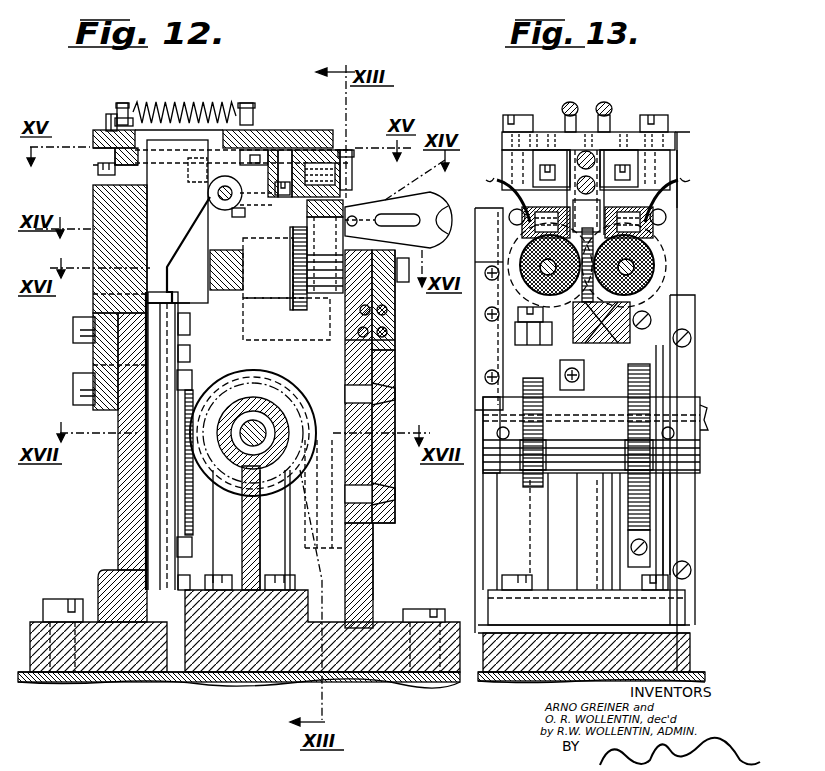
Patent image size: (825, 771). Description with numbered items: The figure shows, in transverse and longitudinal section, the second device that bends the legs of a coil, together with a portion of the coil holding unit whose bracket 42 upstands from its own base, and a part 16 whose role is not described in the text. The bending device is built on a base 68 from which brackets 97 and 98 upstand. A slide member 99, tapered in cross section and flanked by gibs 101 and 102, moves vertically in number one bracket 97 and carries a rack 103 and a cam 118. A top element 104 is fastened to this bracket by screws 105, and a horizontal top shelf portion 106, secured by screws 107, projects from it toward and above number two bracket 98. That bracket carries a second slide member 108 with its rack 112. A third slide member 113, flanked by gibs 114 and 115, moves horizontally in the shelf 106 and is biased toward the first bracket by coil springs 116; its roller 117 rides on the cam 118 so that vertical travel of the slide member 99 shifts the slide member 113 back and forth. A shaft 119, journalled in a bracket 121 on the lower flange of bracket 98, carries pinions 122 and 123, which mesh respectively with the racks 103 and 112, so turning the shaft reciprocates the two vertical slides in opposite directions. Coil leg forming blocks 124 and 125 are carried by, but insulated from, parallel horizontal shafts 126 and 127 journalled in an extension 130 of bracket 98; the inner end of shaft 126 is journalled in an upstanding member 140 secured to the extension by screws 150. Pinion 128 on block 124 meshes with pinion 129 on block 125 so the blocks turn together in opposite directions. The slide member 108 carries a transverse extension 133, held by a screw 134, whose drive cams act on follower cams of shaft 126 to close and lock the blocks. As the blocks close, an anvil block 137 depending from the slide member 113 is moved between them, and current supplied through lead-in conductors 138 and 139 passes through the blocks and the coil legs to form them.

In FIG. 12, the roller 16 is at (410, 203).
In FIG. 12, the bracket 42 is at (396, 243).
In FIG. 12, the base 68 is at (38, 665).
In FIG. 13, the base 68 is at (700, 668).
In FIG. 12, the bracket 97 is at (127, 499).
In FIG. 12, the bracket 98 is at (376, 571).
In FIG. 13, the bracket 98 is at (487, 641).
In FIG. 12, the slide member 99 is at (148, 313).
In FIG. 13, the slide member 99 is at (663, 385).
In FIG. 13, the gib 101 is at (690, 314).
In FIG. 12, the gib 102 is at (146, 522).
In FIG. 13, the gib 102 is at (592, 393).
In FIG. 12, the rack 103 is at (184, 522).
In FIG. 12, the top element 104 is at (101, 202).
In FIG. 13, the top element 104 is at (660, 231).
In FIG. 12, the screws 105 is at (80, 335).
In FIG. 12, the top shelf portion 106 is at (273, 130).
In FIG. 13, the top shelf portion 106 is at (677, 132).
In FIG. 12, the screws 107 is at (107, 118).
In FIG. 12, the slide member 108 is at (374, 537).
In FIG. 13, the slide member 108 is at (485, 378).
In FIG. 13, the rack 112 is at (628, 535).
In FIG. 12, the slide member 113 is at (114, 158).
In FIG. 13, the slide member 113 is at (546, 132).
In FIG. 13, the gib 114 is at (506, 132).
In FIG. 13, the gib 115 is at (628, 150).
In FIG. 12, the coil springs 116 is at (183, 104).
In FIG. 13, the coil springs 116 is at (572, 103).
In FIG. 12, the roller 117 is at (208, 196).
In FIG. 12, the cam 118 is at (167, 280).
In FIG. 12, the shaft 119 is at (240, 430).
In FIG. 13, the shaft 119 is at (483, 472).
In FIG. 12, the bracket 121 is at (216, 579).
In FIG. 13, the bracket 121 is at (562, 538).
In FIG. 12, the pinion 122 is at (229, 376).
In FIG. 13, the pinion 122 is at (626, 488).
In FIG. 13, the pinion 123 is at (530, 490).
In FIG. 13, the coil leg forming block 124 is at (510, 192).
In FIG. 12, the coil leg forming block 125 is at (318, 250).
In FIG. 13, the coil leg forming block 125 is at (610, 208).
In FIG. 13, the shaft 126 is at (487, 280).
In FIG. 12, the shaft 127 is at (401, 290).
In FIG. 13, the shaft 127 is at (650, 260).
In FIG. 13, the pinion 128 is at (488, 270).
In FIG. 12, the pinion 129 is at (259, 255).
In FIG. 13, the pinion 129 is at (660, 272).
In FIG. 12, the extension 130 is at (401, 316).
In FIG. 12, the transverse extension 133 is at (294, 367).
In FIG. 13, the transverse extension 133 is at (500, 338).
In FIG. 13, the screw 134 is at (487, 320).
In FIG. 12, the anvil block 137 is at (350, 198).
In FIG. 13, the anvil block 137 is at (605, 202).
In FIG. 13, the lead-in conductor 138 is at (503, 180).
In FIG. 13, the lead-in conductor 139 is at (675, 187).
In FIG. 12, the member 140 is at (176, 262).
In FIG. 12, the screws 150 is at (402, 345).